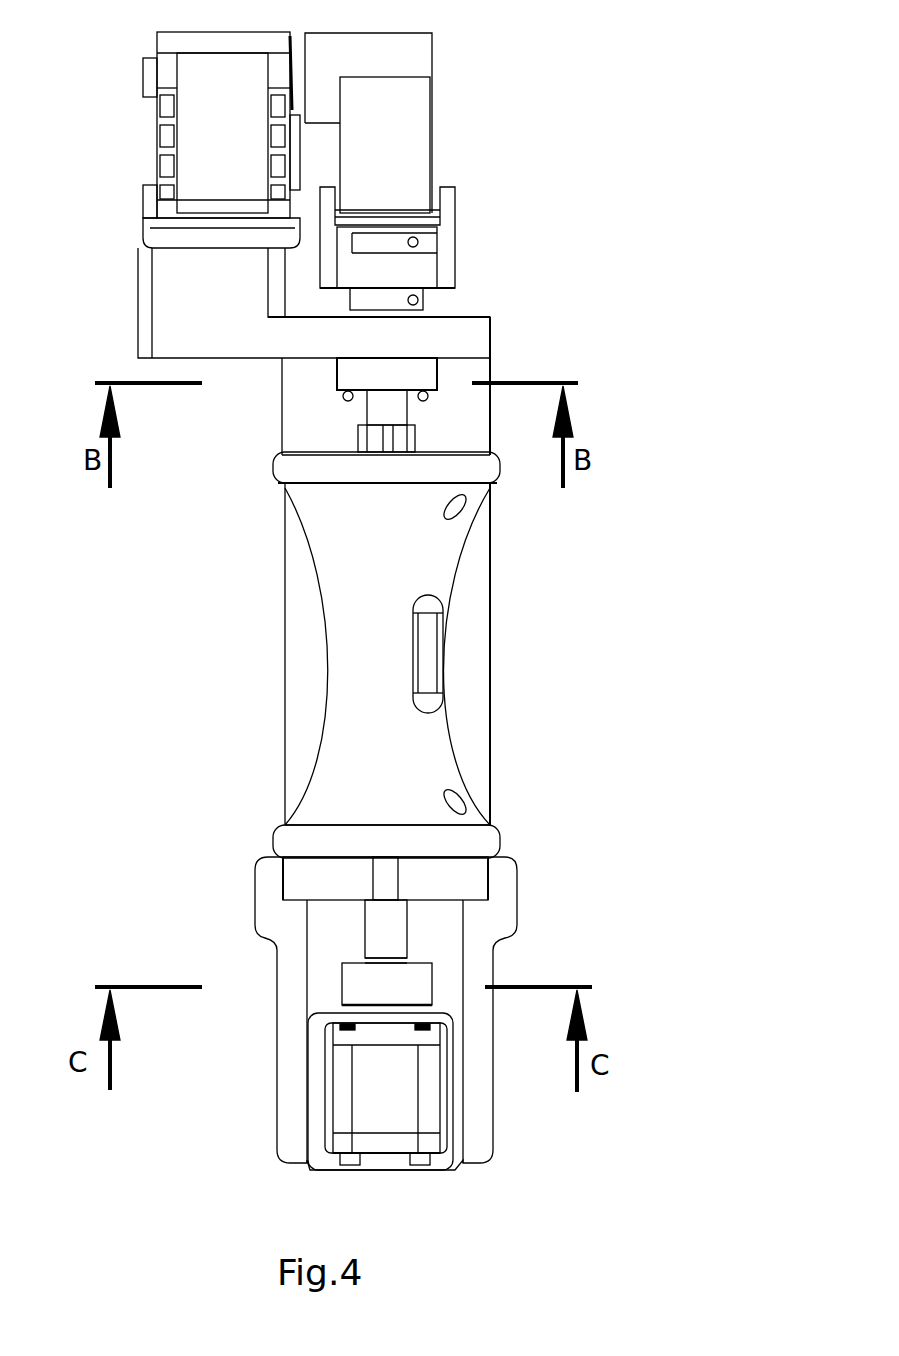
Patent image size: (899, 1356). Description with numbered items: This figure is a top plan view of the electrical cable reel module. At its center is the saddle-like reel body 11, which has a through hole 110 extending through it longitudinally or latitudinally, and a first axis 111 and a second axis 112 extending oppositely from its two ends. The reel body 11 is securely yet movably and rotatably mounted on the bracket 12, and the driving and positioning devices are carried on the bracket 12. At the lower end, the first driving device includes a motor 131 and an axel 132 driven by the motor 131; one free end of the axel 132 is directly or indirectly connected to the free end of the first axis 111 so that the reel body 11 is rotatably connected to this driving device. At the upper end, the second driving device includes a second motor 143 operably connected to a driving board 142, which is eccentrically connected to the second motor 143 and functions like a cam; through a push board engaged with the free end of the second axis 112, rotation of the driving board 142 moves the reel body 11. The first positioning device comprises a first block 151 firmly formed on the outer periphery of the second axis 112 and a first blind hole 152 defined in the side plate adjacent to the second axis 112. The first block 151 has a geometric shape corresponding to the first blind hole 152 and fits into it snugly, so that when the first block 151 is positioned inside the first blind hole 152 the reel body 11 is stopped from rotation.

The reel body 11 is at (345, 622).
The bracket 12 is at (475, 568).
The through hole 110 is at (418, 648).
The first axis 111 is at (383, 872).
The second axis 112 is at (372, 408).
The motor 131 is at (398, 1100).
The axel 132 is at (352, 993).
The driving board 142 is at (398, 143).
The second motor 143 is at (213, 112).
The first block 151 is at (360, 436).
The first blind hole 152 is at (413, 370).